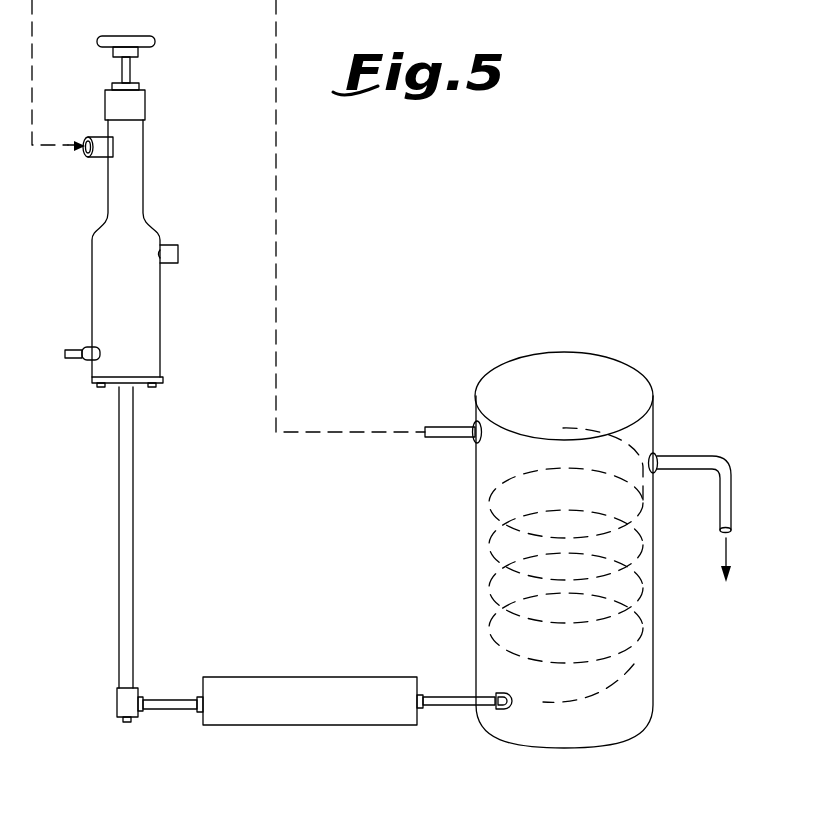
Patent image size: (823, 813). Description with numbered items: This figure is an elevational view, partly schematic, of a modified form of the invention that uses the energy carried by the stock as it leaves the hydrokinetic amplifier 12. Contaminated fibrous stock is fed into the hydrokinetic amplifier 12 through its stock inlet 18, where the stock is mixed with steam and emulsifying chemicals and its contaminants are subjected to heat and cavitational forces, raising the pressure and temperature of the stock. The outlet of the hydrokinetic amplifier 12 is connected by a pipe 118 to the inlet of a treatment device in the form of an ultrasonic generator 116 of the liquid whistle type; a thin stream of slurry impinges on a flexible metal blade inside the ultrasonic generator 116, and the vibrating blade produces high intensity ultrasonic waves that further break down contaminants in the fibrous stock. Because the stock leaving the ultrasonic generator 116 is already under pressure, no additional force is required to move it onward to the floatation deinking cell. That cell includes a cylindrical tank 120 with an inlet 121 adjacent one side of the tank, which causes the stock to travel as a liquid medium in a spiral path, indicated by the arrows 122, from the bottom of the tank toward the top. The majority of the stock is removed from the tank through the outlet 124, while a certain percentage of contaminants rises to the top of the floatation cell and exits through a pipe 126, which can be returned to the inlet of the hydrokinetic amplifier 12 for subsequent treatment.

The hydrokinetic amplifier 12 is at (160, 333).
The stock inlet 18 is at (83, 152).
The ultrasonic generator 116 is at (293, 725).
The pipe 118 is at (133, 483).
The cylindrical tank 120 is at (625, 372).
The inlet 121 is at (462, 706).
The arrows 122 is at (625, 672).
The outlet 124 is at (700, 455).
The pipe 126 is at (446, 427).